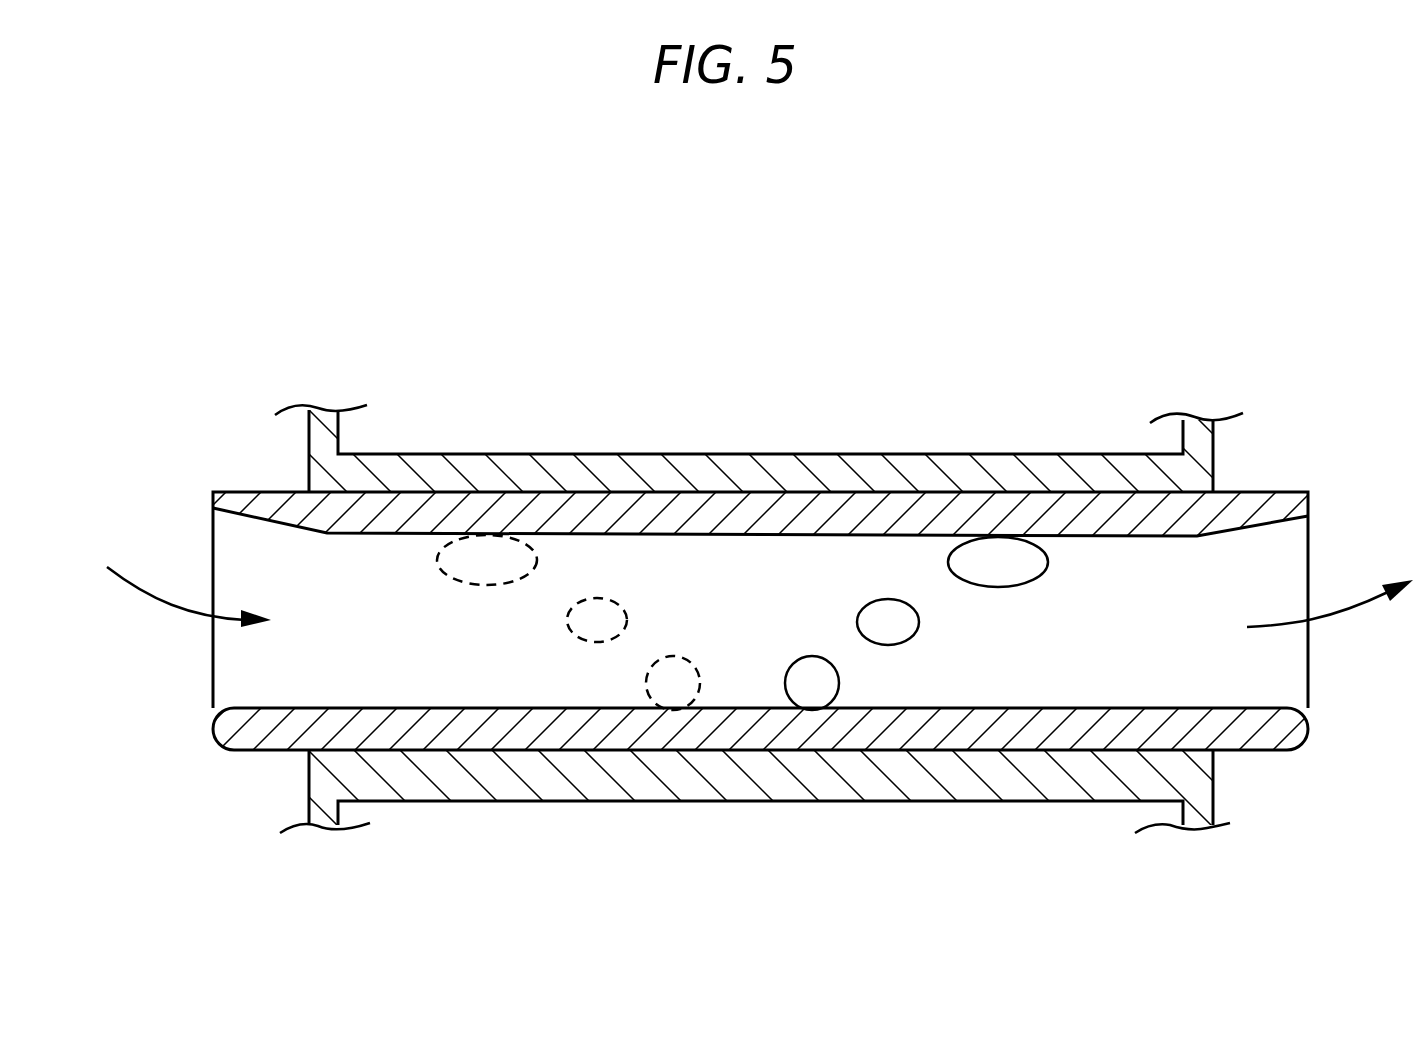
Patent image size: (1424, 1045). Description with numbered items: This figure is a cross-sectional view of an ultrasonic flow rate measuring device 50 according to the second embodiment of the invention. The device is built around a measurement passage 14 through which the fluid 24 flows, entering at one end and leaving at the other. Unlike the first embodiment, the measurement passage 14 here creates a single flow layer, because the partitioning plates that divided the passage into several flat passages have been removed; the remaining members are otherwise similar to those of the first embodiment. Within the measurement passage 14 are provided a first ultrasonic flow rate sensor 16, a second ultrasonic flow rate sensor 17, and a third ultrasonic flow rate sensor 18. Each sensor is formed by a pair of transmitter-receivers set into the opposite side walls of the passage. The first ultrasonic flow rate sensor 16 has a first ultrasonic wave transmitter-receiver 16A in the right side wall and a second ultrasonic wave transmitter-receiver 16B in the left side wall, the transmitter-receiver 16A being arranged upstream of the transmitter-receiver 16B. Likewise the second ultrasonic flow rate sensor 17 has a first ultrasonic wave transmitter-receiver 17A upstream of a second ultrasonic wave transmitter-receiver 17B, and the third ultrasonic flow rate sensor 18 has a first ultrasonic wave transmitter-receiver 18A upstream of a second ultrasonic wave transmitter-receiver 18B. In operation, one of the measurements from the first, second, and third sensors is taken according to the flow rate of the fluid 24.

The measurement passage 14 is at (686, 445).
The ultrasonic flow rate measuring device 50 is at (820, 368).
The fluid 24 is at (153, 597).
The first ultrasonic flow rate sensor 16 is at (476, 522).
The first ultrasonic wave transmitter-receiver 16A is at (505, 552).
The second ultrasonic wave transmitter-receiver 16B is at (999, 552).
The second ultrasonic flow rate sensor 17 is at (597, 660).
The first ultrasonic wave transmitter-receiver 17A is at (597, 608).
The second ultrasonic wave transmitter-receiver 17B is at (889, 608).
The third ultrasonic flow rate sensor 18 is at (691, 700).
The first ultrasonic wave transmitter-receiver 18A is at (655, 700).
The second ultrasonic wave transmitter-receiver 18B is at (816, 693).